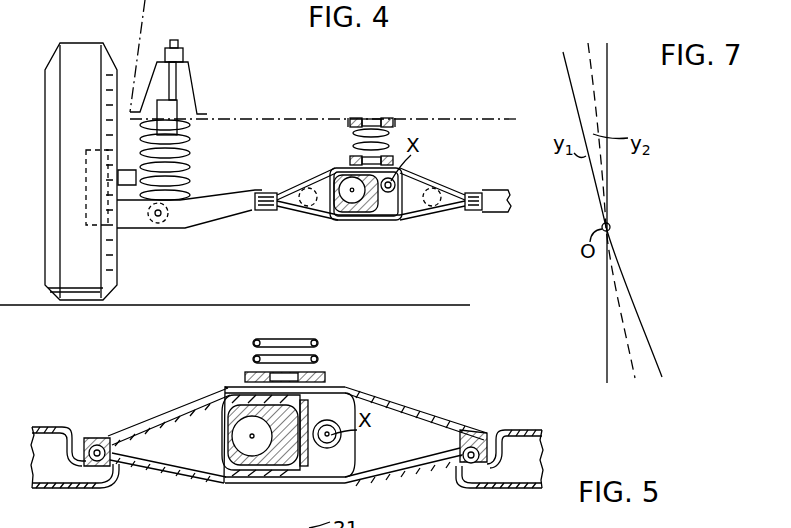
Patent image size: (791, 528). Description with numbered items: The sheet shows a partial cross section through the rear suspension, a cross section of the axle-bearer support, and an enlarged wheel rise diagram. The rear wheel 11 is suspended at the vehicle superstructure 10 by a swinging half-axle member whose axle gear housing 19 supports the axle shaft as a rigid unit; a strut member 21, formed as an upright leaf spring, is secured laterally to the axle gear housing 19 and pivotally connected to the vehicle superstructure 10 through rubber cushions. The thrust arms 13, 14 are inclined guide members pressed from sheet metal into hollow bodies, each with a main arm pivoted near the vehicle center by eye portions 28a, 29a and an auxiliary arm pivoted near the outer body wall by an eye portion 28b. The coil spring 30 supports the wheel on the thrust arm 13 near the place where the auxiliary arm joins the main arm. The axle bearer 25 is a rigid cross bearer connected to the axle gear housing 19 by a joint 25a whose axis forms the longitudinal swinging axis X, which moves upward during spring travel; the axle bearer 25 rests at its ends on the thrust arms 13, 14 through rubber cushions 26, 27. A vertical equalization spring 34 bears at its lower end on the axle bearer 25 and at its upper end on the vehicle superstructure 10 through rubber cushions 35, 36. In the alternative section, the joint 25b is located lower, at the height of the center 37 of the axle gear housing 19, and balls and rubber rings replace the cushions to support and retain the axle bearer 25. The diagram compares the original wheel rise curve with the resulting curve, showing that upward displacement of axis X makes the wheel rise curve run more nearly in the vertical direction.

In FIG. 4, the vehicle superstructure 10 is at (275, 119).
In FIG. 4, the rear wheel 11 is at (83, 265).
In FIG. 4, the thrust arm 13 is at (218, 203).
In FIG. 5, the thrust arm 13 is at (56, 488).
In FIG. 4, the thrust arm 14 is at (498, 202).
In FIG. 5, the thrust arm 14 is at (518, 480).
In FIG. 4, the axle gear housing 19 is at (333, 177).
In FIG. 5, the axle gear housing 19 is at (233, 461).
In FIG. 4, the strut member 21 is at (372, 214).
In FIG. 5, the strut member 21 is at (292, 464).
In FIG. 4, the axle bearer 25 is at (421, 216).
In FIG. 5, the axle bearer 25 is at (400, 468).
In FIG. 4, the joint 25a is at (396, 220).
In FIG. 5, the joint 25b is at (340, 447).
In FIG. 4, the rubber cushion 26 is at (266, 212).
In FIG. 4, the rubber cushion 27 is at (476, 212).
In FIG. 4, the eye portion 28a is at (312, 212).
In FIG. 4, the eye portion 28b is at (100, 200).
In FIG. 4, the eye portion 29a is at (436, 197).
In FIG. 4, the coil spring 30 is at (190, 143).
In FIG. 4, the equalization spring 34 is at (355, 141).
In FIG. 5, the equalization spring 34 is at (322, 345).
In FIG. 4, the rubber cushion 35 is at (351, 162).
In FIG. 5, the rubber cushion 35 is at (326, 381).
In FIG. 4, the rubber cushion 36 is at (380, 118).
In FIG. 4, the center of the axle gear housing 37 is at (352, 192).
In FIG. 5, the center of the axle gear housing 37 is at (250, 435).